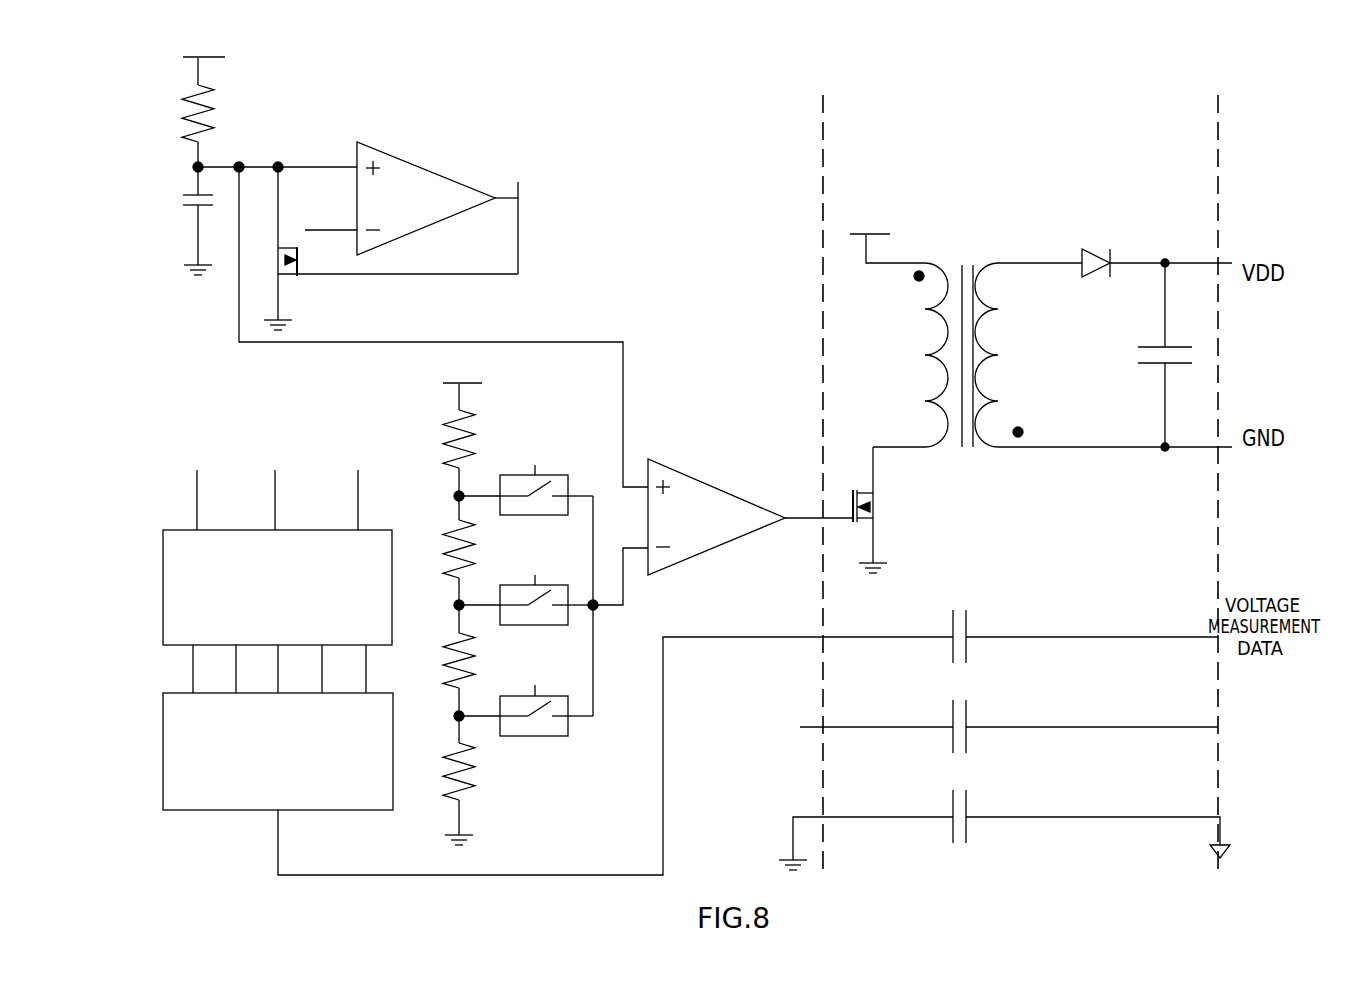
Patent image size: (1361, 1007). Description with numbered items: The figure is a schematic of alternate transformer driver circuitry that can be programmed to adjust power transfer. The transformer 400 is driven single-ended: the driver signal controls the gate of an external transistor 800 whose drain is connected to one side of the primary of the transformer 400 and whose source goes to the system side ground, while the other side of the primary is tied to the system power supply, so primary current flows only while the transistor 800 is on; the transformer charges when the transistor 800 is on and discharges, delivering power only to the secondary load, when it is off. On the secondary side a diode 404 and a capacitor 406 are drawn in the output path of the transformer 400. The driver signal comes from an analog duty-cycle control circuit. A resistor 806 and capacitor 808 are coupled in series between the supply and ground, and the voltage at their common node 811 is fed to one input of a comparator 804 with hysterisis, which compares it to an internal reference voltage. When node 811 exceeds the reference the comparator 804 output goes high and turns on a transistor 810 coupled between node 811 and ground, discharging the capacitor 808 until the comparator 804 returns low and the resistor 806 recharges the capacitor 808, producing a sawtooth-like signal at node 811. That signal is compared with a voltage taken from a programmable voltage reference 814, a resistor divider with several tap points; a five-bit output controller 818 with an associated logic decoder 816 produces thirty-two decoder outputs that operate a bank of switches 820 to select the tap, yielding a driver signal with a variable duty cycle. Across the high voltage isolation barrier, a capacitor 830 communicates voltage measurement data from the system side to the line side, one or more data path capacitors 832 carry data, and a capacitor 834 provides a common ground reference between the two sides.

The transformer 400 is at (970, 248).
The diode 404 is at (1097, 250).
The capacitor 406 is at (1150, 365).
The external transistor 800 is at (883, 508).
The comparator with hysterisis 804 is at (418, 162).
The resistor 806 is at (220, 93).
The capacitor 808 is at (185, 210).
The transistor 810 is at (290, 292).
The common node 811 is at (245, 158).
The programmable voltage reference 814 is at (436, 431).
The logic decoder 816 is at (163, 620).
The 5 bit output controller 818 is at (163, 782).
The bank of switches 820 is at (512, 515).
The capacitor 830 is at (968, 627).
The data path capacitors 832 is at (968, 717).
The capacitor 834 is at (968, 807).